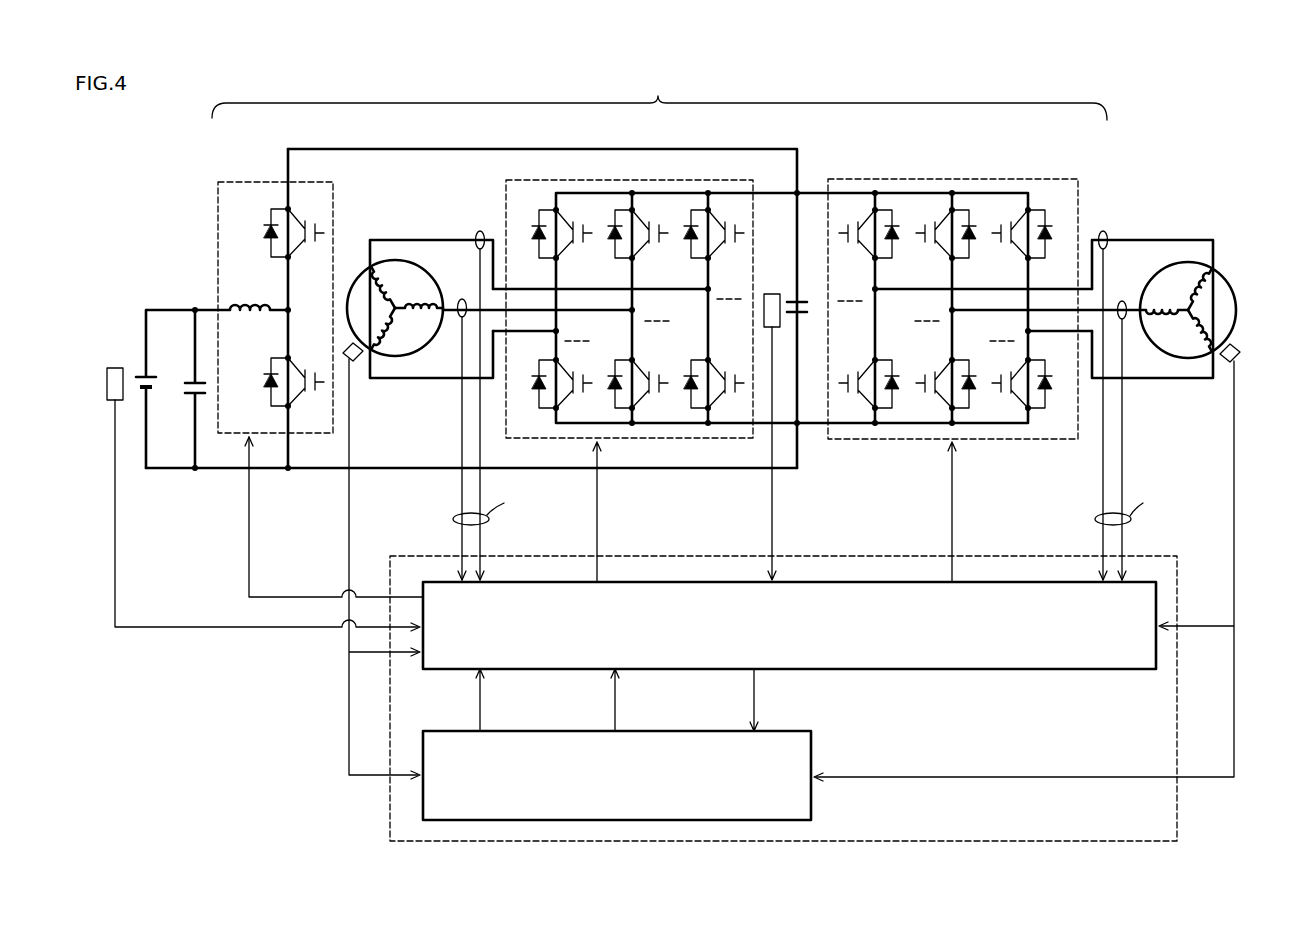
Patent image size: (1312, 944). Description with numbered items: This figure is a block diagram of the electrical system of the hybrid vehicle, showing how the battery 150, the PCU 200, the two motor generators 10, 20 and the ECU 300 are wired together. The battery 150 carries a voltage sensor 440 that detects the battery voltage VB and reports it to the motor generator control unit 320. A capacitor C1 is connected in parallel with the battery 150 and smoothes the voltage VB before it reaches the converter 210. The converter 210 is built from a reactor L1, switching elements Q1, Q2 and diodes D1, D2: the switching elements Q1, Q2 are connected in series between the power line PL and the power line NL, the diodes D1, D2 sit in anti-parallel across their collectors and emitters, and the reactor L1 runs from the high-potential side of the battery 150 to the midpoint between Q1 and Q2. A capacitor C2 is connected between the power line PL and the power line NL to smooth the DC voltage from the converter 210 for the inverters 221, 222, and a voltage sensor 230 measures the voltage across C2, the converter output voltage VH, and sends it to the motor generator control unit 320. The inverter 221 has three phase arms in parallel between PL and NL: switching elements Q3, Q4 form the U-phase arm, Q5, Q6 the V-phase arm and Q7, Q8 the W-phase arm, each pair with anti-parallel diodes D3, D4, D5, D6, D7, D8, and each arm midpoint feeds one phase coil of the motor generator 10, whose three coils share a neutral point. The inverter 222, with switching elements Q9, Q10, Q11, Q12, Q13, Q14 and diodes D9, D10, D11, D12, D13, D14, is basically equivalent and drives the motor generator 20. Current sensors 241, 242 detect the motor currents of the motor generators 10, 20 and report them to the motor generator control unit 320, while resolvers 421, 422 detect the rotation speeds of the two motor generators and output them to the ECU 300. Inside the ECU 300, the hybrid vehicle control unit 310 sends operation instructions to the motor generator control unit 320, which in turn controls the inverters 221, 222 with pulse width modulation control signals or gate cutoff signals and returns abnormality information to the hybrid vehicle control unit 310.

The PCU 200 is at (659, 97).
The converter 210 is at (238, 180).
The inverter 221 is at (700, 178).
The inverter 222 is at (1027, 178).
The voltage sensor 230 is at (772, 293).
The current sensor 241 is at (480, 230).
The current sensor 242 is at (1103, 231).
The motor generator 10 is at (357, 277).
The motor generator 20 is at (1227, 273).
The resolver 421 is at (363, 367).
The resolver 422 is at (1242, 357).
The voltage sensor 440 is at (113, 367).
The battery 150 is at (155, 378).
The ECU 300 is at (1159, 556).
The HV-ECU 310 is at (812, 740).
The MG-ECU 320 is at (1130, 671).
The power line PL is at (403, 152).
The power line NL is at (400, 463).
The reactor L1 is at (241, 294).
The capacitor C1 is at (192, 397).
The capacitor C2 is at (800, 298).
The switching element Q1 is at (307, 229).
The switching element Q2 is at (307, 378).
The switching element Q3 is at (576, 231).
The switching element Q4 is at (576, 381).
The switching element Q5 is at (652, 231).
The switching element Q6 is at (652, 381).
The switching element Q7 is at (727, 231).
The switching element Q8 is at (727, 381).
The switching element Q9 is at (855, 231).
The switching element Q10 is at (855, 380).
The switching element Q11 is at (930, 231).
The switching element Q12 is at (930, 380).
The switching element Q13 is at (1005, 231).
The switching element Q14 is at (1005, 380).
The diode D1 is at (264, 238).
The diode D2 is at (264, 387).
The diode D3 is at (534, 238).
The diode D4 is at (534, 388).
The diode D5 is at (609, 238).
The diode D6 is at (609, 388).
The diode D7 is at (685, 238).
The diode D8 is at (685, 388).
The diode D9 is at (898, 246).
The diode D10 is at (906, 391).
The diode D11 is at (979, 246).
The diode D12 is at (984, 391).
The diode D13 is at (1053, 246).
The diode D14 is at (1054, 398).